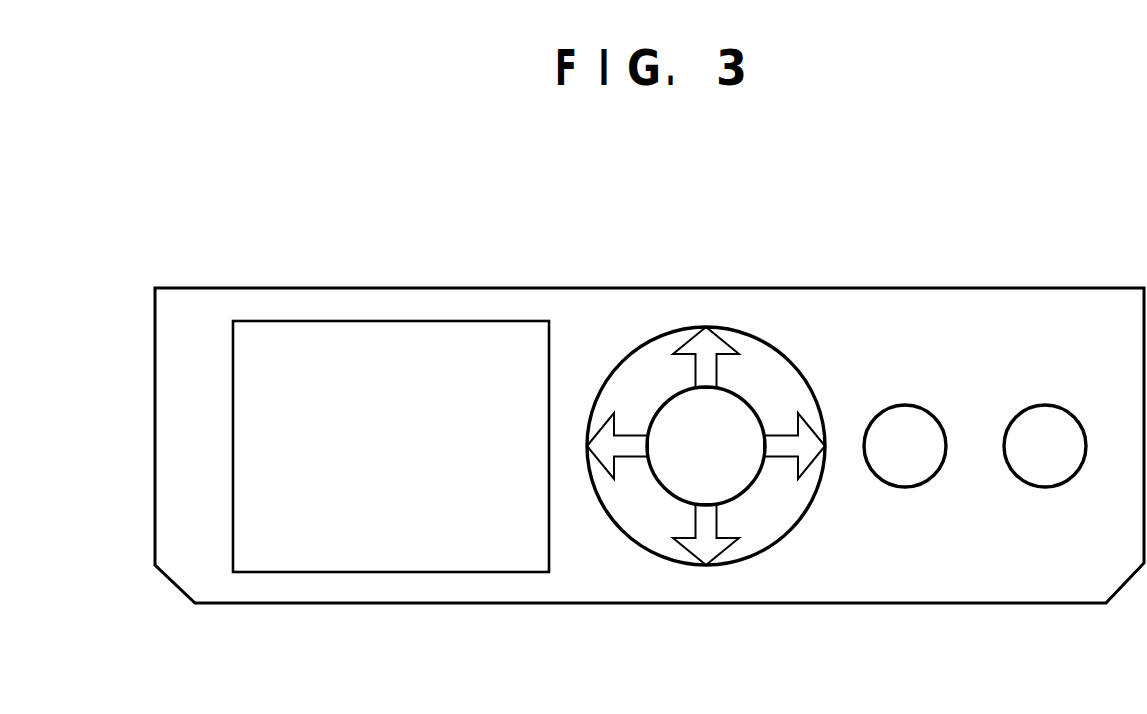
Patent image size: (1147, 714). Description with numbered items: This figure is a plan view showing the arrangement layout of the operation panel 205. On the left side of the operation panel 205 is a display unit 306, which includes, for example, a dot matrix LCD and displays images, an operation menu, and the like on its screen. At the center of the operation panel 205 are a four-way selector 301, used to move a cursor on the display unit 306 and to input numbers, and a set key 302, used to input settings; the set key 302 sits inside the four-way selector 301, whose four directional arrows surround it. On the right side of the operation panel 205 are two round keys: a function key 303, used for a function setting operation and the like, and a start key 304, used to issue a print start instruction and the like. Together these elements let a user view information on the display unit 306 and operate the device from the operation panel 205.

The operation panel 205 is at (1097, 288).
The 4-way selector 301 is at (653, 552).
The set key 302 is at (680, 435).
The function key 303 is at (884, 407).
The start key 304 is at (1022, 407).
The display unit 306 is at (282, 325).